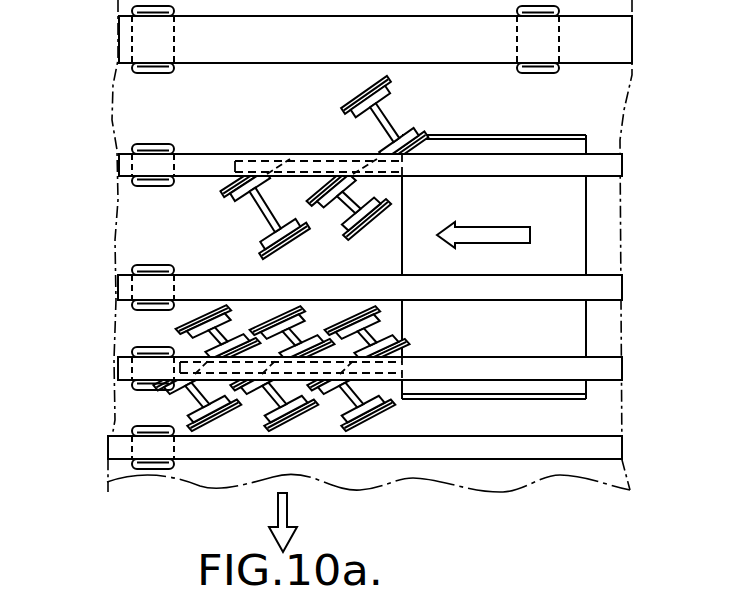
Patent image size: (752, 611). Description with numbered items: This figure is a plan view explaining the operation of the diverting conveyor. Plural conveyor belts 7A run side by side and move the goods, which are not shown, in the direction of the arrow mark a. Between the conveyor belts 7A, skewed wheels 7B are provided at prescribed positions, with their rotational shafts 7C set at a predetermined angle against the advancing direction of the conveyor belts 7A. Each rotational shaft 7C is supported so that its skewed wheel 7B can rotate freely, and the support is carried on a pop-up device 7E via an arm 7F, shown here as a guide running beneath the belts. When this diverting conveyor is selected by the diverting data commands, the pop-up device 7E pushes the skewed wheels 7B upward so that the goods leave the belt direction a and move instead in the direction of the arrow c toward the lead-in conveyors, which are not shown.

The conveyor belts 7A is at (618, 172).
The skewed wheels 7B is at (343, 103).
The rotational shafts 7C is at (388, 115).
The pop-up device 7E is at (487, 143).
The arm 7F is at (252, 160).
The arrow mark a is at (490, 227).
The arrow c is at (287, 518).